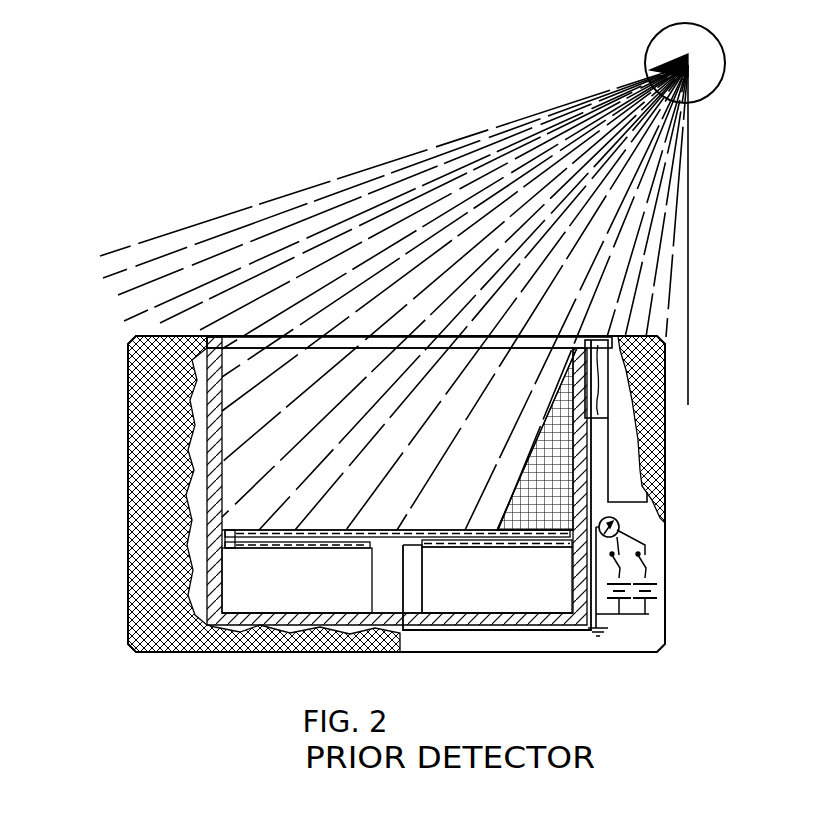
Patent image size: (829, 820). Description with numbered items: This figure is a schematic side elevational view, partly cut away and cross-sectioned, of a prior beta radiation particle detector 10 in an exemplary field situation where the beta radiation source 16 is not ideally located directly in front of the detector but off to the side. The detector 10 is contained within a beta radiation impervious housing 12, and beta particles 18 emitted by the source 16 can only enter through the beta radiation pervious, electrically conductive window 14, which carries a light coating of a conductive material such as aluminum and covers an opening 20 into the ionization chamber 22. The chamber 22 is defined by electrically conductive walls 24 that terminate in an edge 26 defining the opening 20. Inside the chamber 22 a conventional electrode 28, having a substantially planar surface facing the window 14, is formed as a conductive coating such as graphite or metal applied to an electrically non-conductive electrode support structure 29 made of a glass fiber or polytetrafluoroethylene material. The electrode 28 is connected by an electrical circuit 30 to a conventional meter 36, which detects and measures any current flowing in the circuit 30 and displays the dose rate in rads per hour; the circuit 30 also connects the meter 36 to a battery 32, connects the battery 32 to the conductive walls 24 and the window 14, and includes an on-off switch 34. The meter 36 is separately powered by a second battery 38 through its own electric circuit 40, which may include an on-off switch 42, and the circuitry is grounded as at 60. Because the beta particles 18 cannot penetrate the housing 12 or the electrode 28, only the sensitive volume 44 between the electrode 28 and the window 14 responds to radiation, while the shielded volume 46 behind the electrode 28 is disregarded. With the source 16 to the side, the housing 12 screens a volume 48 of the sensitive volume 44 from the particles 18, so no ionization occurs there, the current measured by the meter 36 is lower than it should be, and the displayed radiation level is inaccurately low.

The beta radiation particle detector 10 is at (118, 418).
The housing 12 is at (128, 547).
The electrically conductive window 14 is at (352, 343).
The source 16 is at (662, 44).
The beta radiation particles 18 is at (418, 127).
The opening 20 is at (392, 362).
The ionization chamber 22 is at (307, 585).
The electrically conductive walls 24 is at (222, 565).
The edge 26 is at (222, 350).
The electrode 28 is at (438, 548).
The electrode support structure 29 is at (422, 590).
The electrical circuit 30 is at (597, 342).
The battery 32 is at (660, 597).
The on-off switch 34 is at (642, 558).
The meter 36 is at (620, 530).
The battery 38 is at (650, 616).
The electric circuit 40 is at (619, 616).
The on-off switch 42 is at (613, 557).
The sensitive volume 44 is at (389, 479).
The shielded volume 46 is at (307, 609).
The screened volume 48 is at (535, 488).
The ground 60 is at (598, 633).